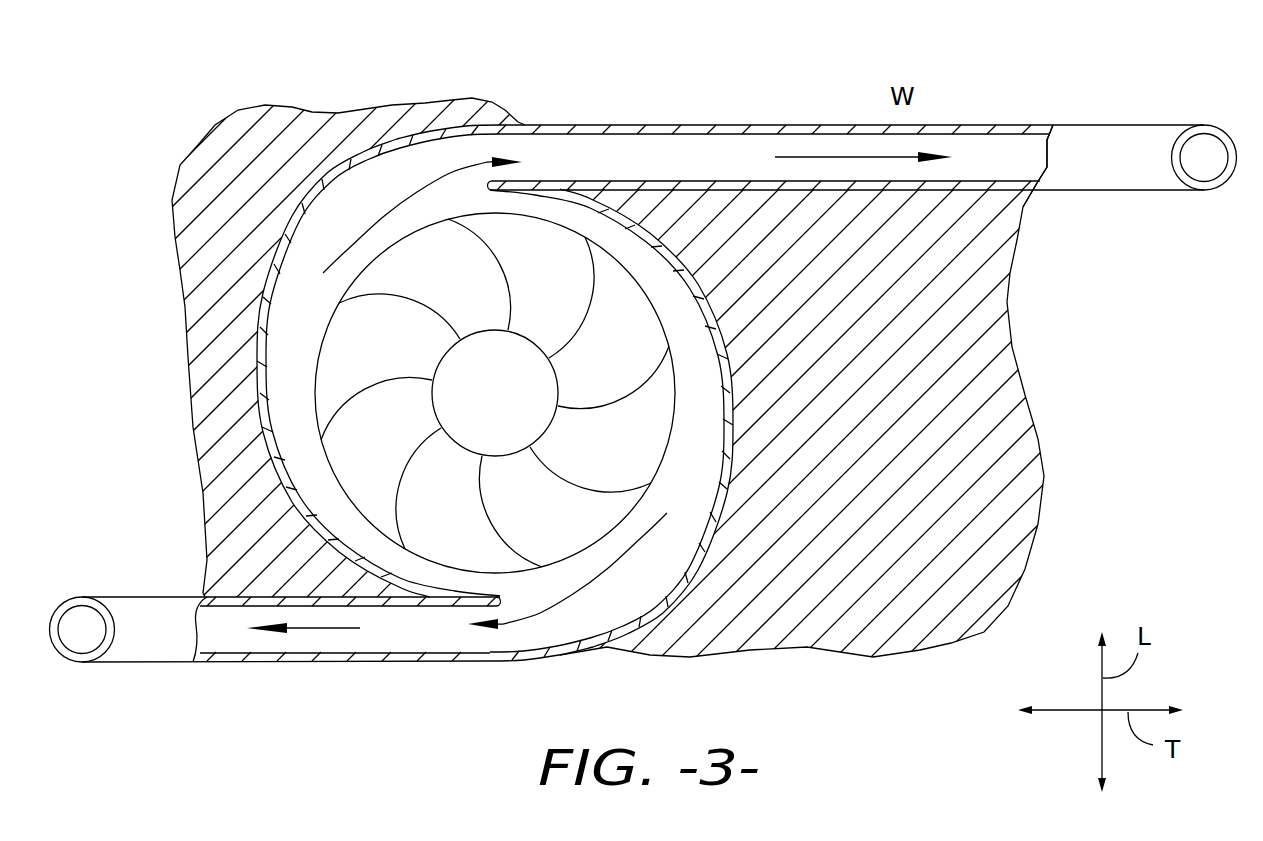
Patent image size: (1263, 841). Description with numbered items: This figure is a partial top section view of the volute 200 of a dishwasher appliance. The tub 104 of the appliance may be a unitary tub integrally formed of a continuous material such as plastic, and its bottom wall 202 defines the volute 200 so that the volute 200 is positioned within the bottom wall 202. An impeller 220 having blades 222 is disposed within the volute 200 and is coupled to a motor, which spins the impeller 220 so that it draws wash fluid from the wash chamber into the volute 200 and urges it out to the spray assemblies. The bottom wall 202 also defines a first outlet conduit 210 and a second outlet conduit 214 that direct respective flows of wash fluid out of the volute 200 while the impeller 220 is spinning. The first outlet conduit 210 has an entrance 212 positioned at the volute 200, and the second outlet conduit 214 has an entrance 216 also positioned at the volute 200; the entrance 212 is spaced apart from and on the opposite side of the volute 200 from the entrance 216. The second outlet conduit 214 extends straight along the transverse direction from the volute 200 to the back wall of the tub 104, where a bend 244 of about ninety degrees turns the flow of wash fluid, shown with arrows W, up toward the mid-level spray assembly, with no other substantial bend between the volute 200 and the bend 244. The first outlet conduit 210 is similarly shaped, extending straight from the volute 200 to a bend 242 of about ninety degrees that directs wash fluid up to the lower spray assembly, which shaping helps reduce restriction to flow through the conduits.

The tub 104 is at (988, 339).
The volute 200 is at (700, 476).
The bottom wall 202 is at (237, 197).
The first outlet conduit 210 is at (225, 642).
The entrance 212 is at (532, 645).
The second outlet conduit 214 is at (673, 145).
The entrance 216 is at (490, 138).
The impeller 220 is at (347, 353).
The blades 222 is at (590, 303).
The bend 242 is at (67, 601).
The bend 244 is at (1173, 124).